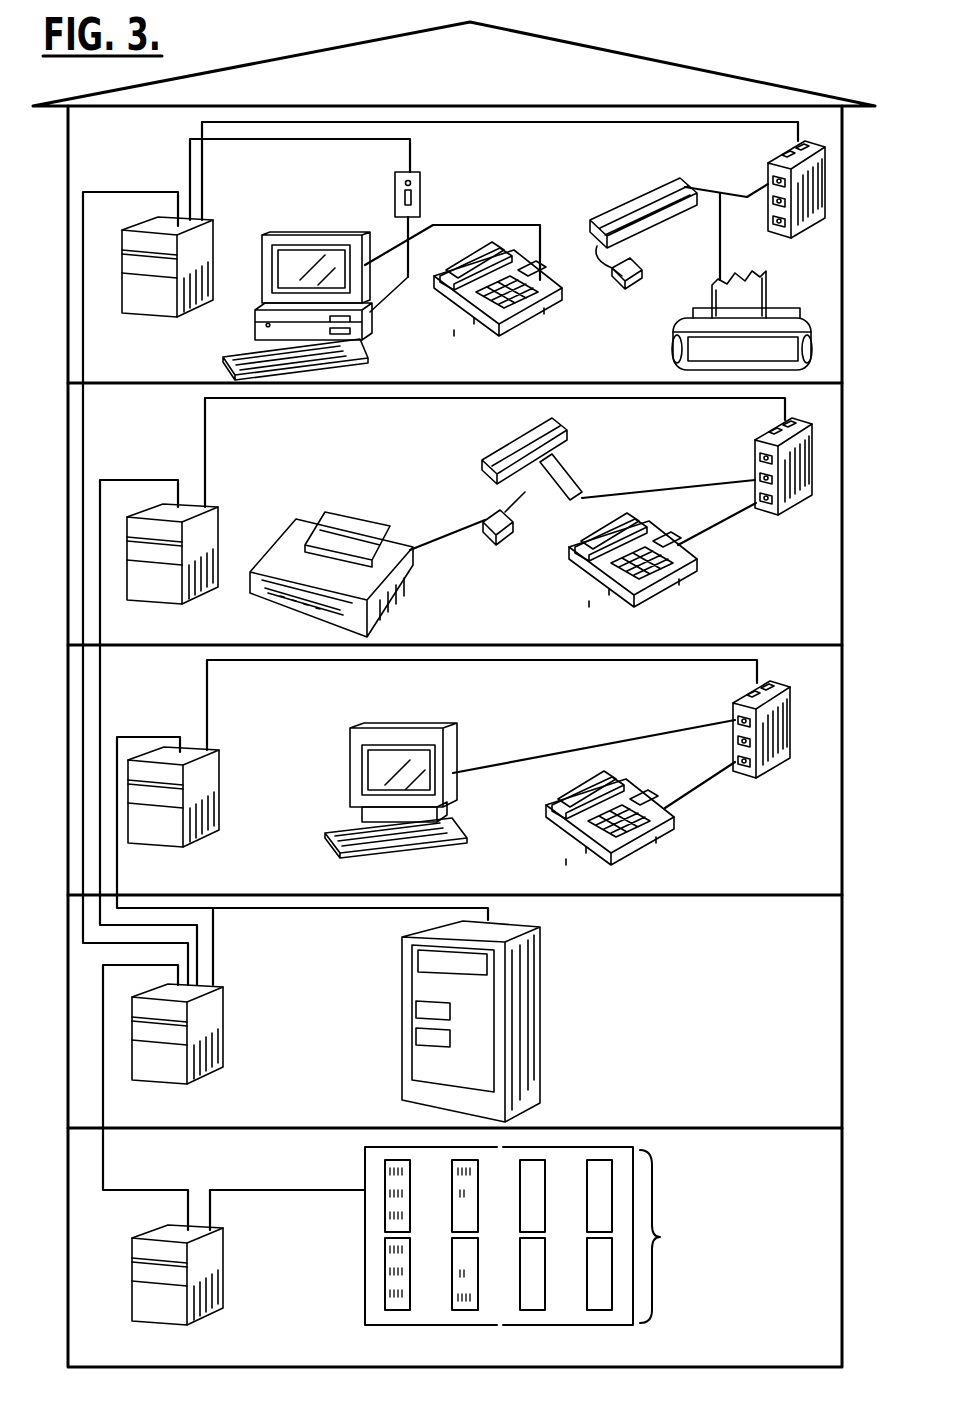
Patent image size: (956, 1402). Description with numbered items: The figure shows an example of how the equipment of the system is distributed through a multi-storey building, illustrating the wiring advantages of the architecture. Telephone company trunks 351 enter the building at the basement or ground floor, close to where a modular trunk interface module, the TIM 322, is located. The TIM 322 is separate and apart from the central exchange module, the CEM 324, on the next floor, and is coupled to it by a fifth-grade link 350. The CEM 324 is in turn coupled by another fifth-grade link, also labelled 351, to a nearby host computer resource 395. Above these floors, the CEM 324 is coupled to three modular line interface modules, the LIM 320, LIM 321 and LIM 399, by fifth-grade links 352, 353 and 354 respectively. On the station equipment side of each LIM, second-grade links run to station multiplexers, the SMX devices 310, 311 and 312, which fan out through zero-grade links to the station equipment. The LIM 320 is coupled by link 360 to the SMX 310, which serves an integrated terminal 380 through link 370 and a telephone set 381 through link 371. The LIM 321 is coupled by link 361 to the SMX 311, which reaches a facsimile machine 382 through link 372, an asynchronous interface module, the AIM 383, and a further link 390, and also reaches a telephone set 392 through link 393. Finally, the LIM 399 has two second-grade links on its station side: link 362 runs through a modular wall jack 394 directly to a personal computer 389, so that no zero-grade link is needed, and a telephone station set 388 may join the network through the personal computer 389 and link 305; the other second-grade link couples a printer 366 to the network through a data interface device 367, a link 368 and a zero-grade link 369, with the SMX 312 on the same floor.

The GL-0 link 305 is at (480, 220).
The SMX device 310 is at (748, 777).
The SMX device 311 is at (767, 517).
The SMX device 312 is at (768, 148).
The modular LIM device 320 is at (203, 827).
The modular LIM device 321 is at (187, 597).
The modular TIM 322 is at (215, 1300).
The CEM 324 is at (193, 1088).
The GL-5 link 350 is at (103, 1153).
The telephone company trunks 351 is at (273, 910).
The GL-5 link 352 is at (153, 735).
The GL-5 link 353 is at (135, 477).
The GL-5 link 354 is at (123, 192).
The GL-2 link 360 is at (300, 662).
The GL-2 link 361 is at (682, 400).
The GL-2 link 362 is at (248, 142).
The printer 366 is at (673, 350).
The data interface device 367 is at (613, 207).
The link 368 is at (720, 253).
The GL-0 link 369 is at (727, 182).
The GL-0 link 370 is at (567, 752).
The GL-0 link 371 is at (693, 787).
The GL-0 link 372 is at (632, 490).
The integrated terminal 380 is at (350, 748).
The telephone set 381 is at (673, 830).
The facsimile machine 382 is at (393, 610).
The AIM 383 is at (535, 440).
The telephone station set 388 is at (555, 308).
The personal computer 389 is at (255, 320).
The link 390 is at (453, 527).
The telephone set 392 is at (680, 588).
The GL-0 link 393 is at (700, 540).
The modular wall jack 394 is at (420, 185).
The host computer resource 395 is at (540, 1058).
The modular LIM device 399 is at (183, 316).